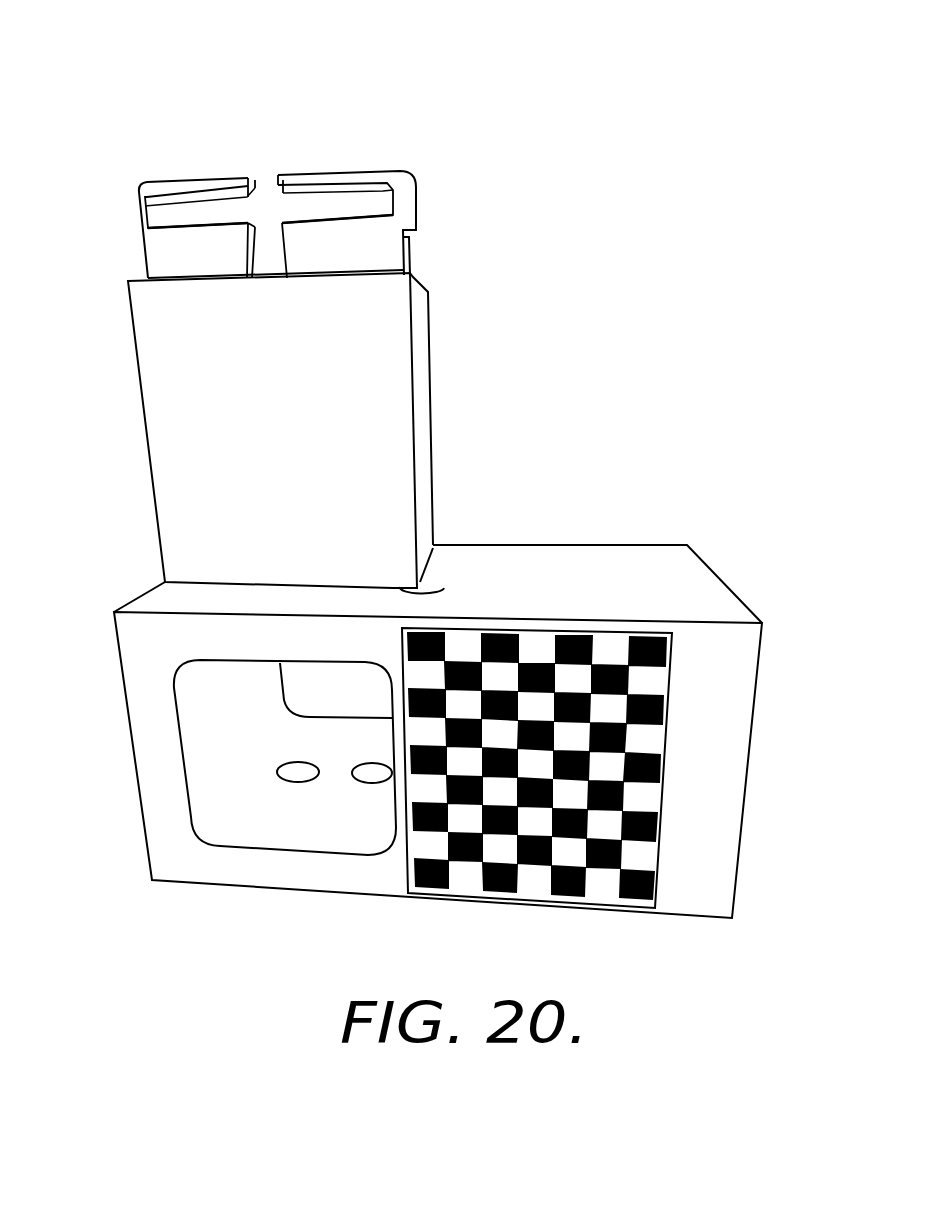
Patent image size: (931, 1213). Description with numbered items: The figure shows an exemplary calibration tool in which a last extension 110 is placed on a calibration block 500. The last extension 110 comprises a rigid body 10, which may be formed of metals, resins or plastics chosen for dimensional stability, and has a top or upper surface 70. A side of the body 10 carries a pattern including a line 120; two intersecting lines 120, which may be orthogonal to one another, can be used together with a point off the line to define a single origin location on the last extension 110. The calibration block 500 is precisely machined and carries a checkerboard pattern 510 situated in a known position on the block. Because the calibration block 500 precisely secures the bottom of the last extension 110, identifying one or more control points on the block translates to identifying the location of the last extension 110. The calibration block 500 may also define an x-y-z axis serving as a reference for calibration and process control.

The last extension 110 is at (401, 80).
The body 10 is at (418, 192).
The top or upper surface 70 is at (333, 168).
The line 120 is at (153, 217).
The calibration block 500 is at (505, 502).
The checkerboard pattern 510 is at (497, 893).